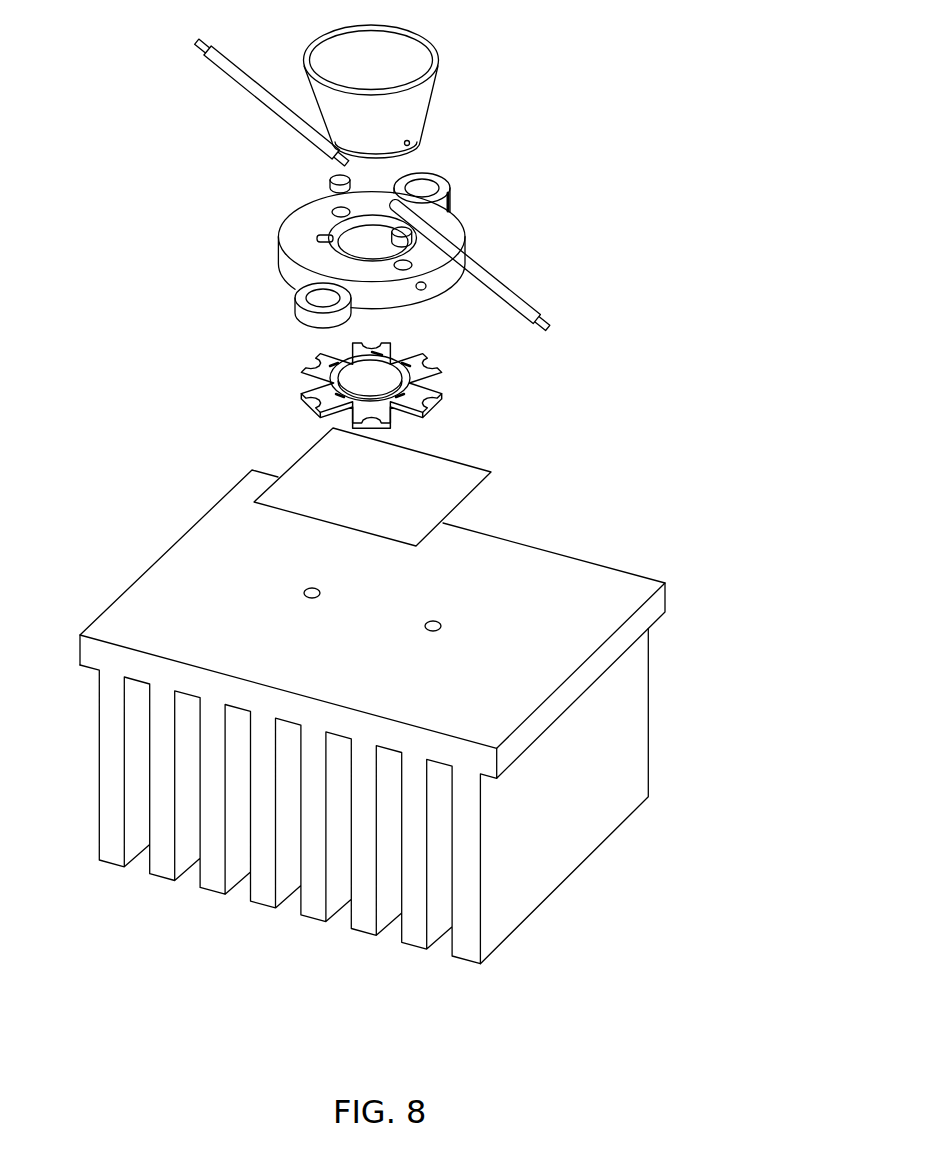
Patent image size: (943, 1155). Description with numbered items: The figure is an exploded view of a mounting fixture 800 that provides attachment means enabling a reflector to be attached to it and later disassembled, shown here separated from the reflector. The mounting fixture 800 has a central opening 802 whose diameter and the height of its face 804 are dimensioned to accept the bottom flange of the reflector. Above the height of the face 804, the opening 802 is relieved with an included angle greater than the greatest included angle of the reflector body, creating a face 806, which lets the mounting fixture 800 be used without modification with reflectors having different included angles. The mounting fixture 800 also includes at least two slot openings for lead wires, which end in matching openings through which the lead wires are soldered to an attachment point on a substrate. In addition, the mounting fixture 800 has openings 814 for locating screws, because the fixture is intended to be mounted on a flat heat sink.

The mounting fixture 800 is at (463, 229).
The opening 802 is at (362, 242).
The face 804 is at (407, 213).
The face 806 is at (375, 215).
The opening for locating screws 814 is at (307, 312).